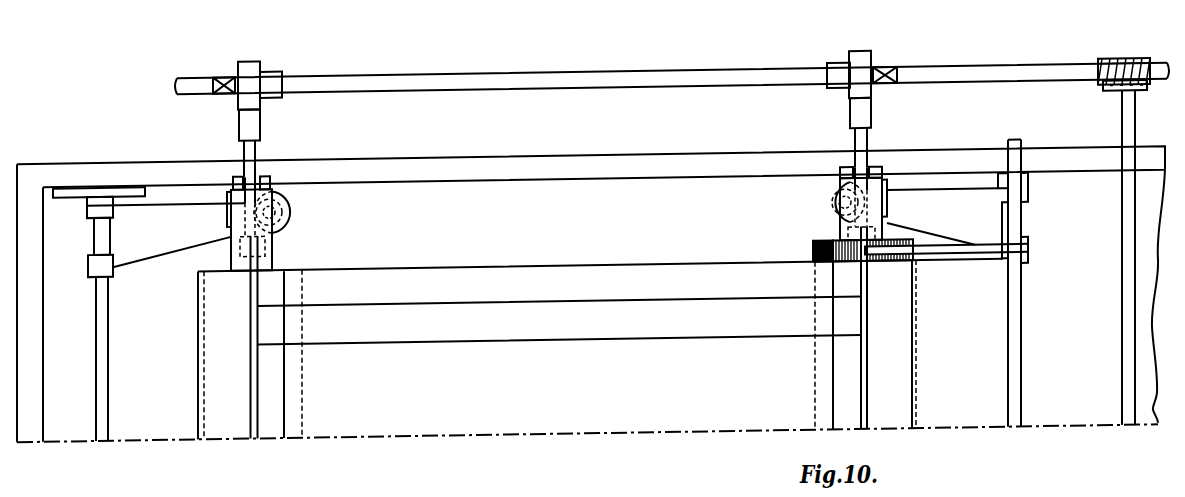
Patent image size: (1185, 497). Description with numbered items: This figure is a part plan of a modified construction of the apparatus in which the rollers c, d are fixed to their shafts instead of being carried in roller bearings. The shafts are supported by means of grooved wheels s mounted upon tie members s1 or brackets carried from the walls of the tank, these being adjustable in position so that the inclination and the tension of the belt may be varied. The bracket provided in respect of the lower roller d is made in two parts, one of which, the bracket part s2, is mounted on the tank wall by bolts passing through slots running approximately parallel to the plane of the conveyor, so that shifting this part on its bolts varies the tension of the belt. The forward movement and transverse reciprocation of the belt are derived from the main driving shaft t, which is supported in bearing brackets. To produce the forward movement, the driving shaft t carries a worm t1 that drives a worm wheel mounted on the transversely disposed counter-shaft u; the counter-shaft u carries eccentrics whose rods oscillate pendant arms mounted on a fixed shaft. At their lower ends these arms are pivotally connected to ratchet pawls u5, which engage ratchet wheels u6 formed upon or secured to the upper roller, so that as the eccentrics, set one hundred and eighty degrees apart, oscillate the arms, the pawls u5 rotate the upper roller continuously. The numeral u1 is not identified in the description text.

The main driving shaft t is at (995, 87).
The worm t1 is at (1133, 57).
The bearing bracket u1 is at (1093, 96).
The counter-shaft u is at (1128, 138).
The ratchet pawl u5 is at (943, 262).
The ratchet wheel u6 is at (917, 274).
The roller c is at (813, 260).
The grooved wheel s is at (293, 214).
The tie member s1 is at (200, 230).
The bracket part s2 is at (107, 190).
The lower roller d is at (277, 274).